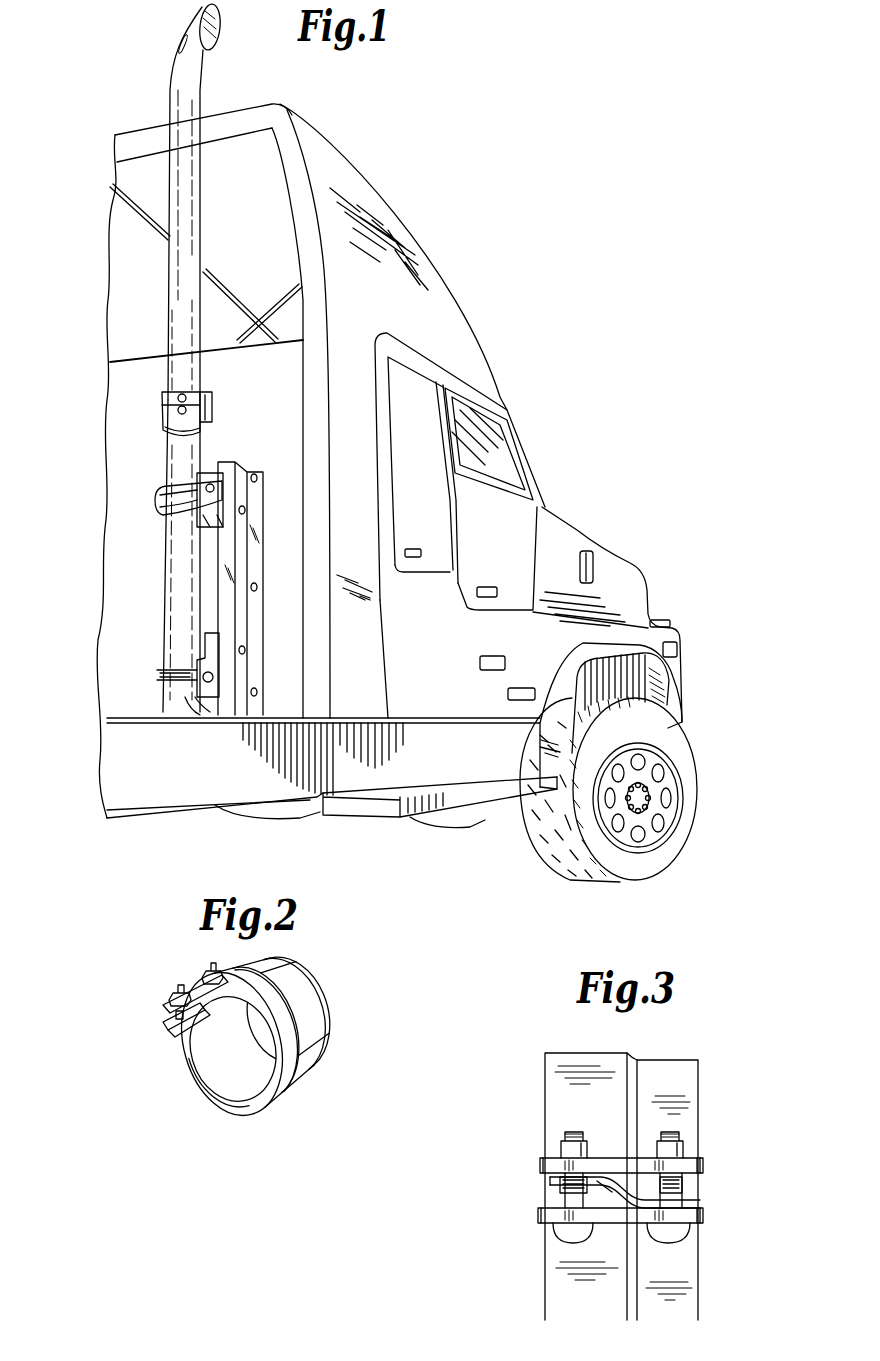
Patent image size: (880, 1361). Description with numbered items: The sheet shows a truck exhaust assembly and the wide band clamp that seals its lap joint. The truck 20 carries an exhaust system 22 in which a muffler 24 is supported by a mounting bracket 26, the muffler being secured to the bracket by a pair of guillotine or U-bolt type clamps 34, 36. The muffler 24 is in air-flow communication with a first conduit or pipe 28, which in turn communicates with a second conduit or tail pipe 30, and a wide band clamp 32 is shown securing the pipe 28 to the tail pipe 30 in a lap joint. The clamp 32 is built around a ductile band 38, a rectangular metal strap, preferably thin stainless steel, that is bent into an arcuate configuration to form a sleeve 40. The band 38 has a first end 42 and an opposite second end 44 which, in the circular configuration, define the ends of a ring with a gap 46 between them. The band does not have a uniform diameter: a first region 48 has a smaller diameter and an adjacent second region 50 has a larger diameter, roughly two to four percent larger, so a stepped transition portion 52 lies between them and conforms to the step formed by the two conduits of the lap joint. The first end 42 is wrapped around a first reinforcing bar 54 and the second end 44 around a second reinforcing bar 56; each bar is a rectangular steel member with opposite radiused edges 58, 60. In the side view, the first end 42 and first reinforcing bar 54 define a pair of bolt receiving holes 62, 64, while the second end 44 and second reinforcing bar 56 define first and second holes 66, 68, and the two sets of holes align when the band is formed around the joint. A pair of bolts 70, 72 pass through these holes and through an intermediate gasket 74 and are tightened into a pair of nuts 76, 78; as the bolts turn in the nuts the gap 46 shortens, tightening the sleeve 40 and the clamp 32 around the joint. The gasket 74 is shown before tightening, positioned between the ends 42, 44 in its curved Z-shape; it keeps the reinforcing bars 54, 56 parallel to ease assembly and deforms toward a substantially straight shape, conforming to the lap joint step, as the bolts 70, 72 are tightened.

In FIG. 1, the truck 20 is at (117, 116).
In FIG. 1, the exhaust system 22 is at (86, 447).
In FIG. 1, the muffler 24 is at (162, 598).
In FIG. 1, the mounting bracket 26 is at (260, 487).
In FIG. 1, the pipe 28 is at (193, 452).
In FIG. 1, the tail pipe 30 is at (182, 32).
In FIG. 1, the wide band clamp 32 is at (200, 390).
In FIG. 2, the wide band clamp 32 is at (334, 986).
In FIG. 1, the U-bolt type clamp 34 is at (167, 497).
In FIG. 1, the U-bolt type clamp 36 is at (160, 673).
In FIG. 2, the ductile band 38 is at (330, 1043).
In FIG. 2, the sleeve 40 is at (323, 1068).
In FIG. 2, the first end 42 is at (208, 975).
In FIG. 3, the first end 42 is at (705, 1158).
In FIG. 2, the second end 44 is at (192, 1050).
In FIG. 3, the second end 44 is at (692, 1223).
In FIG. 2, the gap 46 is at (178, 1010).
In FIG. 2, the first region 48 is at (237, 1103).
In FIG. 3, the first region 48 is at (690, 1072).
In FIG. 2, the second region 50 is at (307, 1007).
In FIG. 3, the second region 50 is at (555, 1060).
In FIG. 2, the stepped transition portion 52 is at (293, 1087).
In FIG. 3, the stepped transition portion 52 is at (632, 1055).
In FIG. 2, the first reinforcing bar 54 is at (176, 995).
In FIG. 3, the first reinforcing bar 54 is at (703, 1163).
In FIG. 2, the second reinforcing bar 56 is at (168, 1032).
In FIG. 3, the second reinforcing bar 56 is at (703, 1213).
In FIG. 2, the radiused edge 58 is at (177, 1037).
In FIG. 2, the radiused edge 60 is at (176, 1015).
In FIG. 3, the bolt receiving hole 62 is at (650, 1148).
In FIG. 3, the bolt receiving hole 64 is at (550, 1152).
In FIG. 3, the first hole 66 is at (560, 1240).
In FIG. 3, the second hole 68 is at (672, 1242).
In FIG. 3, the bolt 70 is at (685, 1183).
In FIG. 3, the bolt 72 is at (553, 1188).
In FIG. 3, the gasket 74 is at (620, 1205).
In FIG. 3, the nut 76 is at (685, 1145).
In FIG. 3, the nut 78 is at (560, 1148).